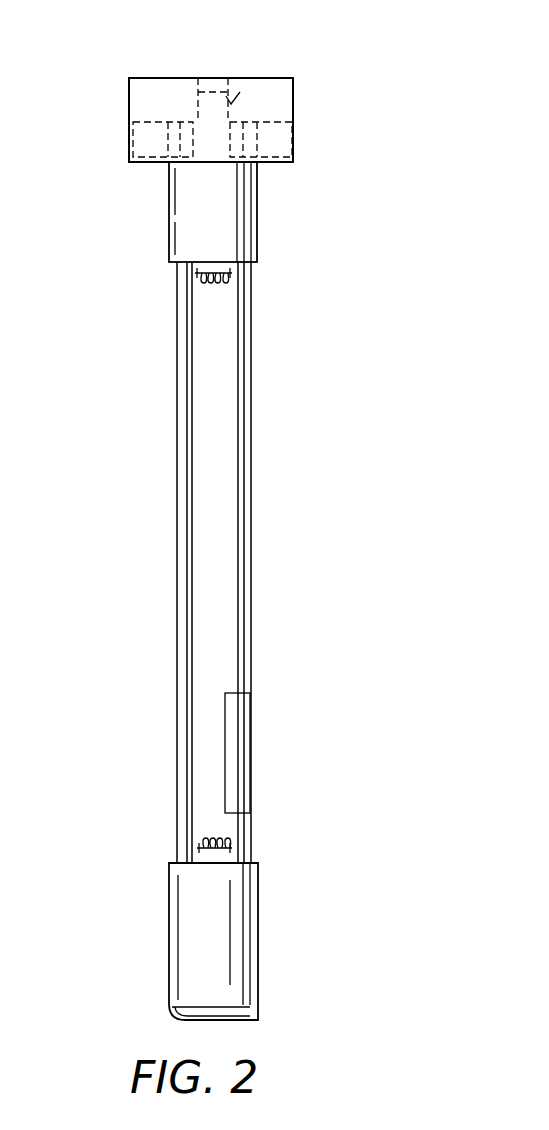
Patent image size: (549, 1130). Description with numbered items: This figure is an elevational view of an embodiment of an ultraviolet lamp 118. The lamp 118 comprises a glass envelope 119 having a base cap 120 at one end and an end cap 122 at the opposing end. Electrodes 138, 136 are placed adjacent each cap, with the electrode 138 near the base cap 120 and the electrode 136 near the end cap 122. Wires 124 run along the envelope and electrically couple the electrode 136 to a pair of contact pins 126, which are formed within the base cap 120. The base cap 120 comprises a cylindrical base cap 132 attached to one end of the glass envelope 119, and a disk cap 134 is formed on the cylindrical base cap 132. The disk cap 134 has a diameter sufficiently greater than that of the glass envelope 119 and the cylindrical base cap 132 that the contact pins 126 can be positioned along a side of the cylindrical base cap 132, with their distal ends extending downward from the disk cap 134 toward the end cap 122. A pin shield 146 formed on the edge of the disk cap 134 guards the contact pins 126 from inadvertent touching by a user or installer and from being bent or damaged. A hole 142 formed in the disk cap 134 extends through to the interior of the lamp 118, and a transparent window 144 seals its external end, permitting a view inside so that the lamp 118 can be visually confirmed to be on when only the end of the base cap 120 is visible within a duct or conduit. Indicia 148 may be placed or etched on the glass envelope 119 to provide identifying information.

The ultraviolet lamp 118 is at (327, 248).
The glass envelope 119 is at (252, 480).
The base cap 120 is at (313, 97).
The end cap 122 is at (169, 913).
The wires 124 is at (178, 556).
The contact pins 126 is at (165, 158).
The cylindrical base cap 132 is at (169, 212).
The disk cap 134 is at (129, 97).
The electrode 136 is at (210, 838).
The electrode 138 is at (222, 280).
The hole 142 is at (234, 96).
The transparent window 144 is at (213, 78).
The pin shield 146 is at (129, 148).
The indicia 148 is at (248, 770).